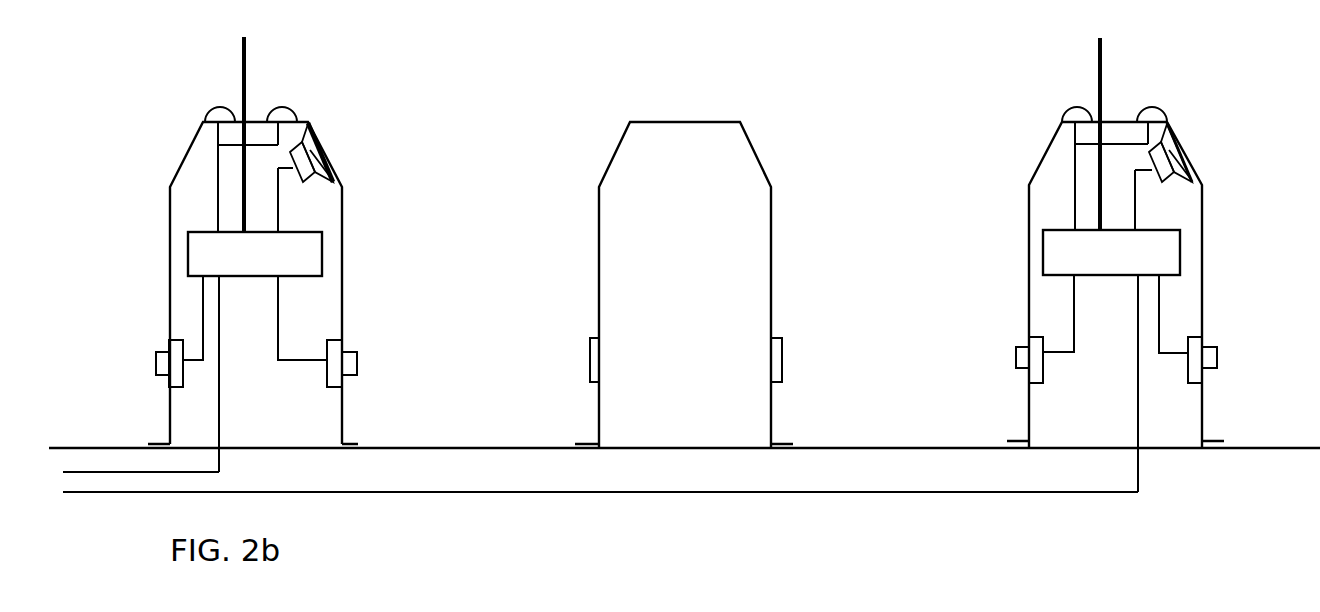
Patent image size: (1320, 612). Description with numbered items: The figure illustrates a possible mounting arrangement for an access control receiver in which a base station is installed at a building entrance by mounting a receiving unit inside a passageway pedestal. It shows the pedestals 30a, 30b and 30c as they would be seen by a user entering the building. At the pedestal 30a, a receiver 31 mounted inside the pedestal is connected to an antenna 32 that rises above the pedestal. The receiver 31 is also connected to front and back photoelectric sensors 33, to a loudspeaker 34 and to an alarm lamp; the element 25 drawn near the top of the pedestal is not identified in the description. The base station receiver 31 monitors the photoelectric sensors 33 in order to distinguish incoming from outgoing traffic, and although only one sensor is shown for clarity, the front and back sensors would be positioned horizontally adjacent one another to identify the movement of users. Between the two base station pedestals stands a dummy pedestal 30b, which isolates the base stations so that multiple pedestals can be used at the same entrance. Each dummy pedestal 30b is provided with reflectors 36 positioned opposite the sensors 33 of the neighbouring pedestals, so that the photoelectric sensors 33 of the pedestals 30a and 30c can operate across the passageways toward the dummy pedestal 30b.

The indicator lamps 25 is at (207, 119).
The antenna 32 is at (248, 50).
The loudspeaker 34 is at (318, 142).
The receiver 31 is at (188, 274).
The pedestal 30a is at (343, 280).
The photoelectric sensors 33 is at (357, 363).
The dummy pedestal 30b is at (765, 177).
The reflectors 36 is at (568, 353).
The pedestal 30c is at (1200, 182).